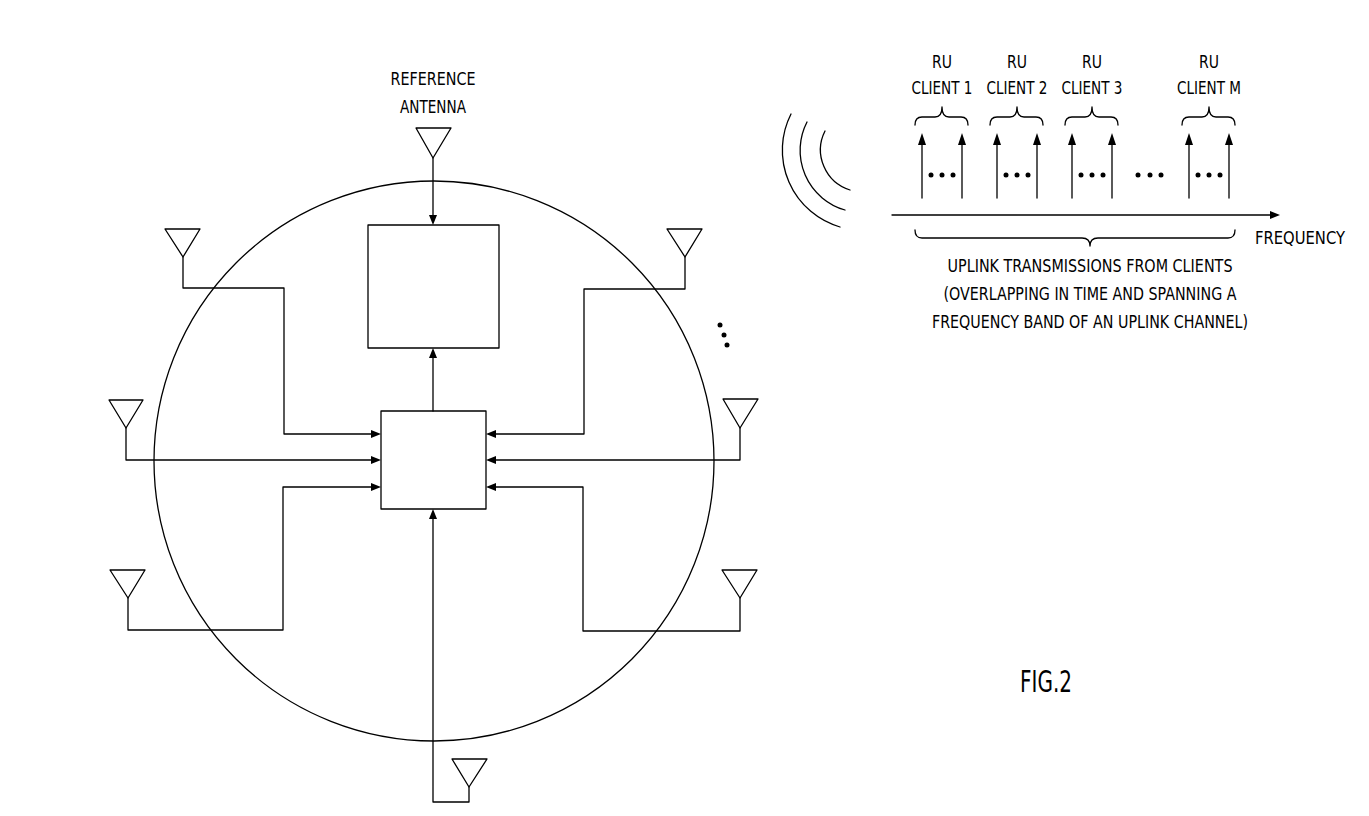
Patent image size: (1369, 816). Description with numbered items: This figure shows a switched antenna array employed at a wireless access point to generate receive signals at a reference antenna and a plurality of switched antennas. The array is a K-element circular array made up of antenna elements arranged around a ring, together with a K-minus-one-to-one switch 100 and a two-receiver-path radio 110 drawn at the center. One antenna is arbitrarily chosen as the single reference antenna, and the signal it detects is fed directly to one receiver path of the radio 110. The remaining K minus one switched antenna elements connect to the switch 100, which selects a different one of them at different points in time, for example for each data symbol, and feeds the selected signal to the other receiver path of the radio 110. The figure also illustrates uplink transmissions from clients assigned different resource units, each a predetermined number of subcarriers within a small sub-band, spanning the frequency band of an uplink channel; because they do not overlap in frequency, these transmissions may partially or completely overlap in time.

The 2 receiver path radio 110 is at (499, 287).
The K-1:1 switch 100 is at (462, 509).